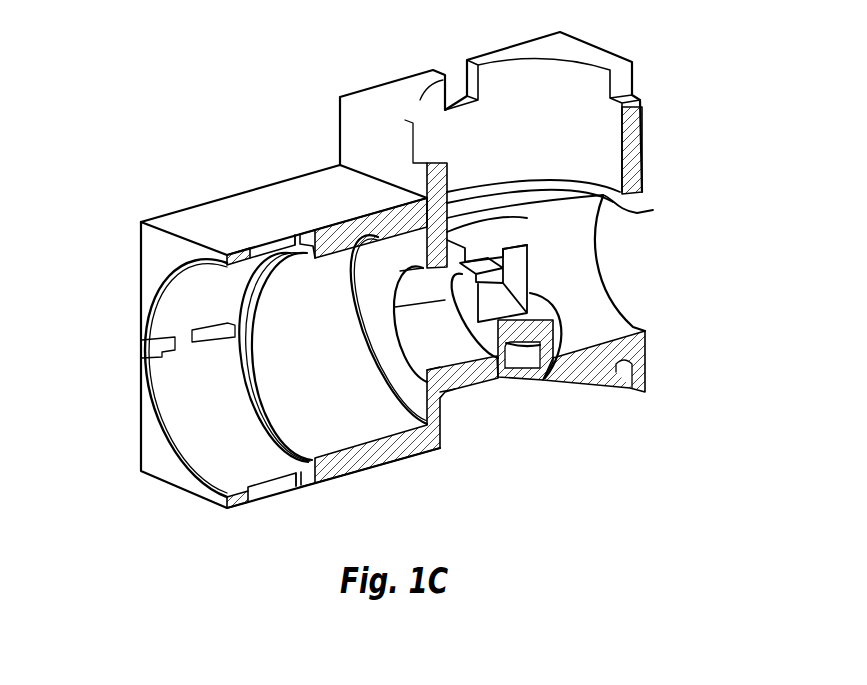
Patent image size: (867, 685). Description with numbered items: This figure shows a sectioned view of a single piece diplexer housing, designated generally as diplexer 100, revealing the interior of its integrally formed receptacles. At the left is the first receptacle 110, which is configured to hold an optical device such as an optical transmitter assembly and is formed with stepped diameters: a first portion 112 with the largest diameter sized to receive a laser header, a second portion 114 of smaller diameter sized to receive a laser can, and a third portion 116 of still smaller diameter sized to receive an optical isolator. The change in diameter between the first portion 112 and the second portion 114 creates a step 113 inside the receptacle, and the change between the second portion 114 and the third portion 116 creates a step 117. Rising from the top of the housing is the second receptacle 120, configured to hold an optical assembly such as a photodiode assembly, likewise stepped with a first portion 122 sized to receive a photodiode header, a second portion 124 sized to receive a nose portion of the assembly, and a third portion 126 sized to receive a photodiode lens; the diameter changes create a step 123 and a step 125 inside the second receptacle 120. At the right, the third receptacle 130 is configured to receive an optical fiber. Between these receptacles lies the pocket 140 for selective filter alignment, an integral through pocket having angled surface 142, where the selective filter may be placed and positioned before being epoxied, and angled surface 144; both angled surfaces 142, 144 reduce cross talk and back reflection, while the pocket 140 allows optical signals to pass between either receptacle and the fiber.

The single piece diplexer housing 100 is at (244, 82).
The first receptacle 110 is at (132, 511).
The first portion 112 is at (229, 418).
The step 113 is at (318, 463).
The second portion 114 is at (331, 368).
The third portion 116 is at (449, 347).
The step 117 is at (450, 393).
The second receptacle 120 is at (452, 70).
The first portion 122 is at (553, 111).
The step 123 is at (618, 192).
The second portion 124 is at (490, 203).
The step 125 is at (612, 212).
The third portion 126 is at (503, 233).
The third receptacle 130 is at (636, 301).
The pocket 140 is at (517, 278).
The angled surface 142 is at (520, 305).
The angled surface 144 is at (507, 378).